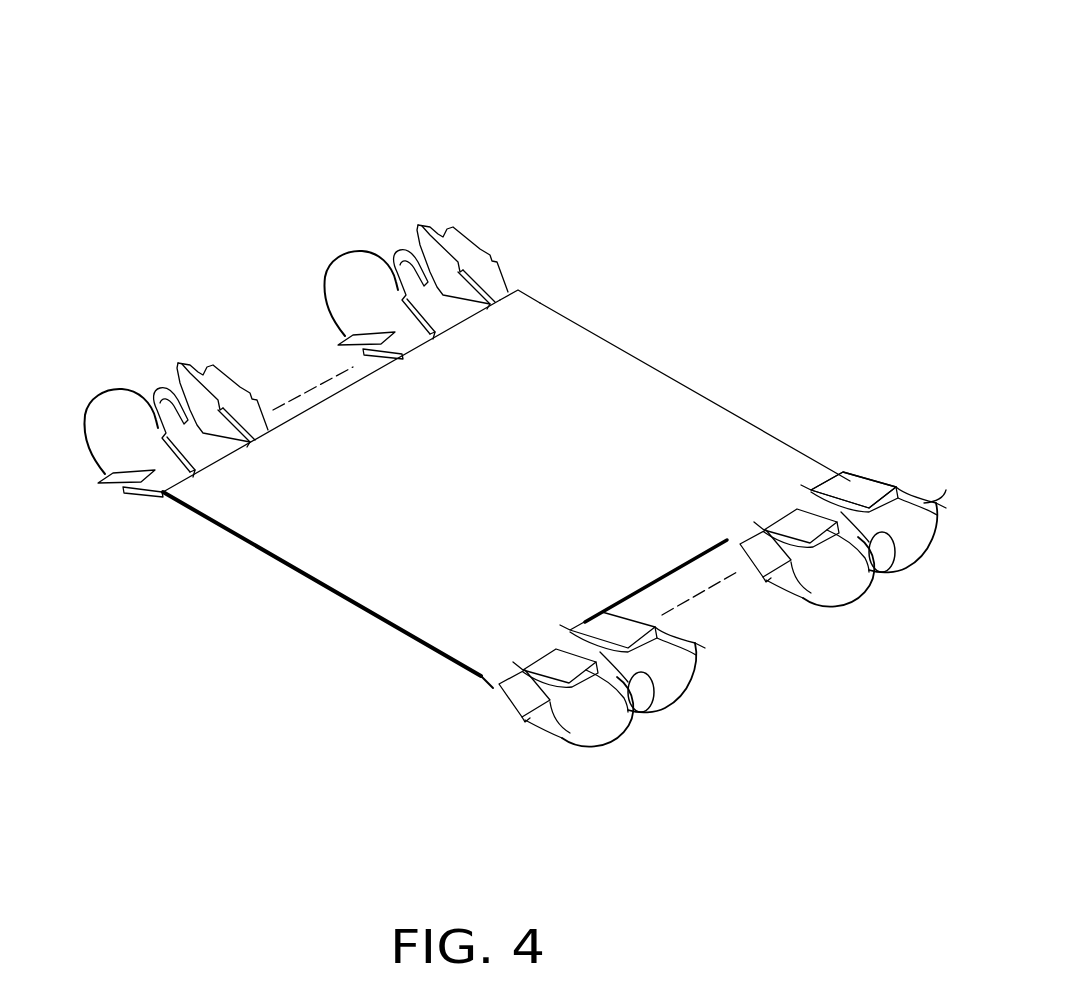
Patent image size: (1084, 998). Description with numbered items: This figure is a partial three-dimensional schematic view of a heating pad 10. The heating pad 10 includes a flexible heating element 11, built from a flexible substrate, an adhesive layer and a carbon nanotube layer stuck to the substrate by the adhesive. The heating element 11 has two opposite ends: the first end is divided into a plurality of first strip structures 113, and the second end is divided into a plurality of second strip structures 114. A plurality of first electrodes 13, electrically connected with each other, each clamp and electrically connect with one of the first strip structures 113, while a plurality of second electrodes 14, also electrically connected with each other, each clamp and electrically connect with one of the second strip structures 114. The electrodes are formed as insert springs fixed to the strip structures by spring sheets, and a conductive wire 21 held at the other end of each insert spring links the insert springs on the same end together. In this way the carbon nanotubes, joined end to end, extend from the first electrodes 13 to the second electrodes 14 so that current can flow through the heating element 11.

The heating pad 10 is at (670, 56).
The heating element 11 is at (623, 390).
The first strip structures 113 is at (520, 289).
The first electrodes 13 is at (482, 272).
The second electrodes 14 is at (858, 492).
The second strip structures 114 is at (820, 492).
The conductive wire 21 is at (843, 602).